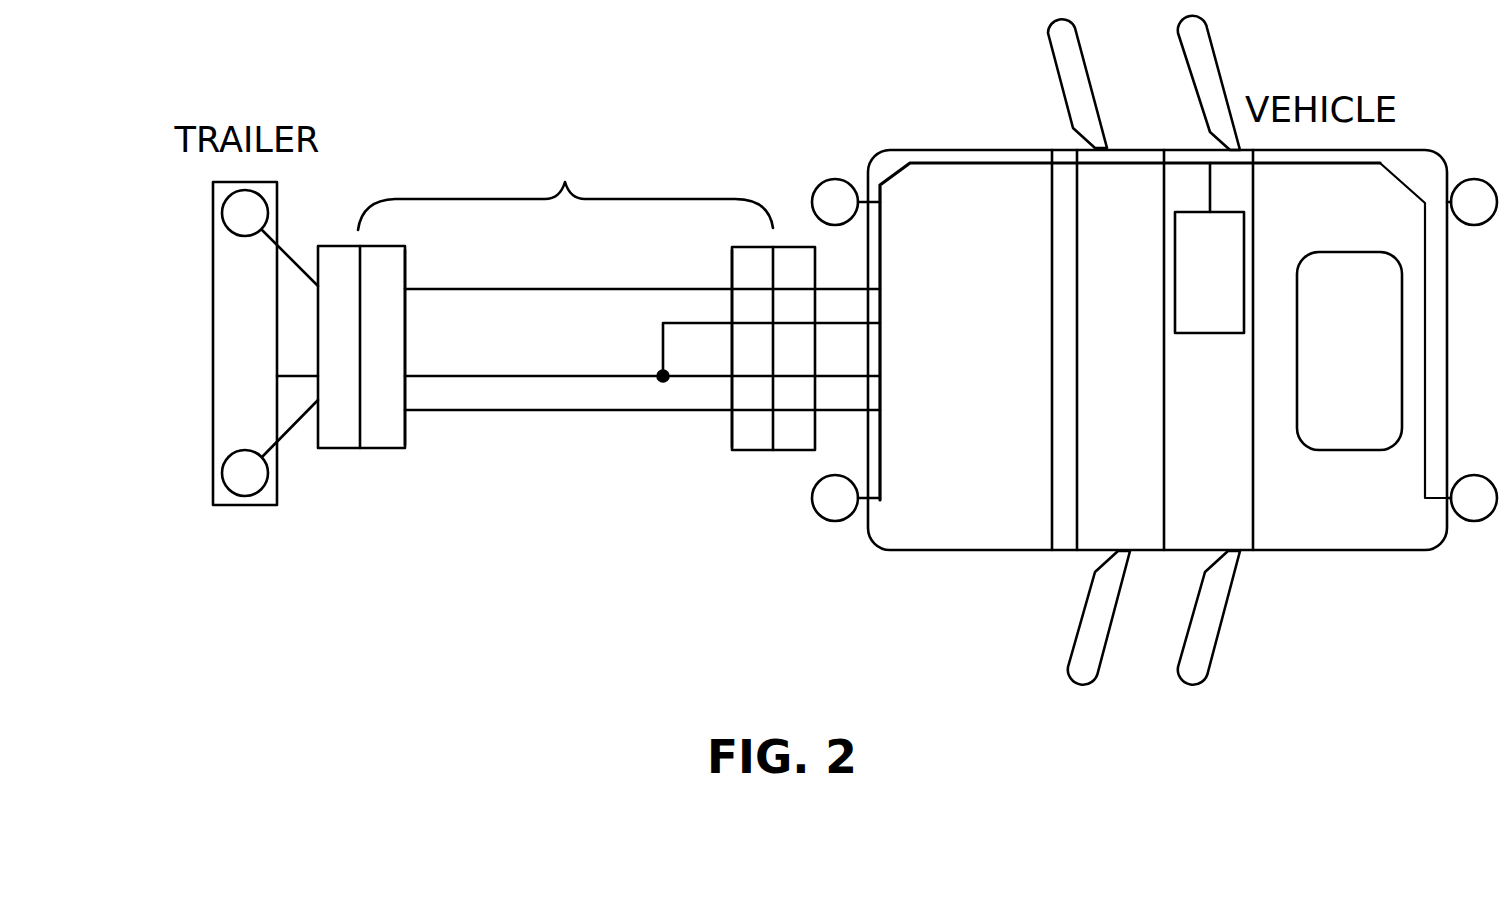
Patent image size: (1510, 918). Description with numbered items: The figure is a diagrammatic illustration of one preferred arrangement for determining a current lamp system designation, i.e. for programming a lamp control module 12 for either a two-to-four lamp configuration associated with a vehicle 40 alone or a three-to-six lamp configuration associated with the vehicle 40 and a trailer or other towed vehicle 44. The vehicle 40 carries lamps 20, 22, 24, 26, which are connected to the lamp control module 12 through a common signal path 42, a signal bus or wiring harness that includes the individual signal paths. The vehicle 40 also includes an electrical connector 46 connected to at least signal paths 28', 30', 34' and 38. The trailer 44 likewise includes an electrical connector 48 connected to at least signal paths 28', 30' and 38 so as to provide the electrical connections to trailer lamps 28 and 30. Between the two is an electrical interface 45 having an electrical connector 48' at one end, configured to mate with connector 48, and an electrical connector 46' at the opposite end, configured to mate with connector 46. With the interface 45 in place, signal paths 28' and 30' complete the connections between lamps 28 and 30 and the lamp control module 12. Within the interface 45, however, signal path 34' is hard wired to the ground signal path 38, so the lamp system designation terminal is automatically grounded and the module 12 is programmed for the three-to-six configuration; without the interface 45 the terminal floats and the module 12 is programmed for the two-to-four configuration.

The lamp control module 12 is at (1210, 334).
The lamp 20 is at (1474, 179).
The lamp 22 is at (1473, 521).
The lamp 24 is at (835, 179).
The lamp 26 is at (835, 522).
The trailer lamp 28 is at (208, 214).
The signal path 28' is at (571, 238).
The trailer lamp 30 is at (208, 474).
The signal path 30' is at (571, 479).
The signal path 34' is at (736, 352).
The signal path 38 is at (305, 376).
The vehicle 40 is at (1407, 150).
The common signal path 42 is at (998, 162).
The trailer or other towed vehicle 44 is at (245, 506).
The electrical interface 45 is at (565, 189).
The electrical connector 46 is at (773, 300).
The electrical connector 46' is at (688, 337).
The electrical connector 48 is at (361, 299).
The electrical connector 48' is at (447, 335).